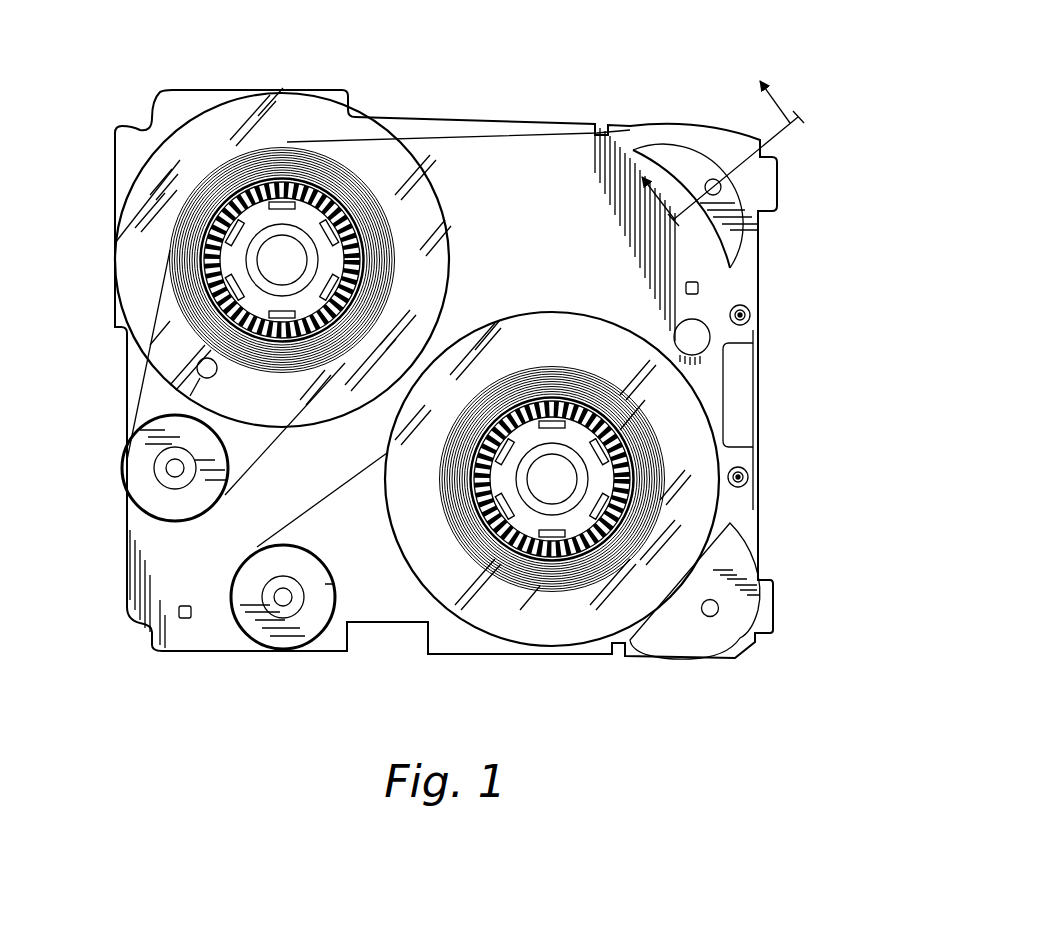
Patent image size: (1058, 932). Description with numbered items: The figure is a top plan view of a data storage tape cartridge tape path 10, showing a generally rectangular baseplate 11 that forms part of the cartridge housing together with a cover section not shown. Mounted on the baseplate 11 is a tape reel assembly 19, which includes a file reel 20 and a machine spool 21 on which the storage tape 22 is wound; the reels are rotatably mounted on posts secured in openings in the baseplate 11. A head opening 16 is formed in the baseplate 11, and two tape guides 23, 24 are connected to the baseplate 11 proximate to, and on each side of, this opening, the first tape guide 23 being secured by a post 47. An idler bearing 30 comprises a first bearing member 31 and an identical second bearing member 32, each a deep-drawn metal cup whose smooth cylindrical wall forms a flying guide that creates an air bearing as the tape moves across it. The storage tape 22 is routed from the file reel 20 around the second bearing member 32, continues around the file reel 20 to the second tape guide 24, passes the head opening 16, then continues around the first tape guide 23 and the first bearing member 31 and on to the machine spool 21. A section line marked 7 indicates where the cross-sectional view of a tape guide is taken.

The data storage tape cartridge tape path 10 is at (848, 80).
The baseplate 11 is at (492, 190).
The head opening 16 is at (735, 447).
The tape reel assembly 19 is at (519, 280).
The file reel 20 is at (133, 268).
The machine spool 21 is at (512, 630).
The storage tape 22 is at (545, 130).
The first tape guide 23 is at (685, 647).
The second tape guide 24 is at (690, 150).
The idler bearing 30 is at (217, 548).
The first bearing member 31 is at (268, 633).
The second bearing member 32 is at (133, 483).
The post 47 is at (719, 606).
The section line 7- 7 is at (732, 170).